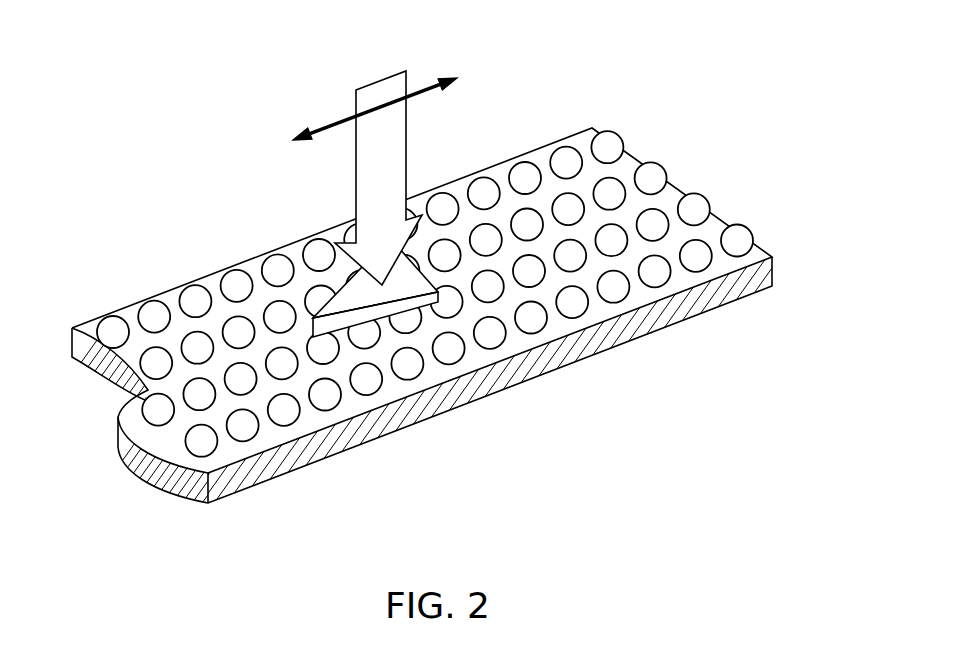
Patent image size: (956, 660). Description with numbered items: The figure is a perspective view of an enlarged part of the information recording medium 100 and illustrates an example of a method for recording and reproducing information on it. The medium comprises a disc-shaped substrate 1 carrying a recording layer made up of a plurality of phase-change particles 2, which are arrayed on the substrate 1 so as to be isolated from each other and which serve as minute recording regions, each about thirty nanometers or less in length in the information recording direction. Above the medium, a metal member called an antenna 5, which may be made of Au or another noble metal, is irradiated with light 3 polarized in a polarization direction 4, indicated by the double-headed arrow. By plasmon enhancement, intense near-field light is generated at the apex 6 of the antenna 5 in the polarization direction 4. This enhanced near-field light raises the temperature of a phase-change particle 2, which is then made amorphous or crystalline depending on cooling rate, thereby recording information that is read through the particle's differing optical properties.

The information recording medium 100 is at (92, 288).
The substrate 1 is at (312, 450).
The phase-change particles 2 is at (447, 348).
The light 3 is at (407, 150).
The polarization direction 4 is at (328, 124).
The antenna 5 is at (350, 297).
The apex 6 is at (315, 322).